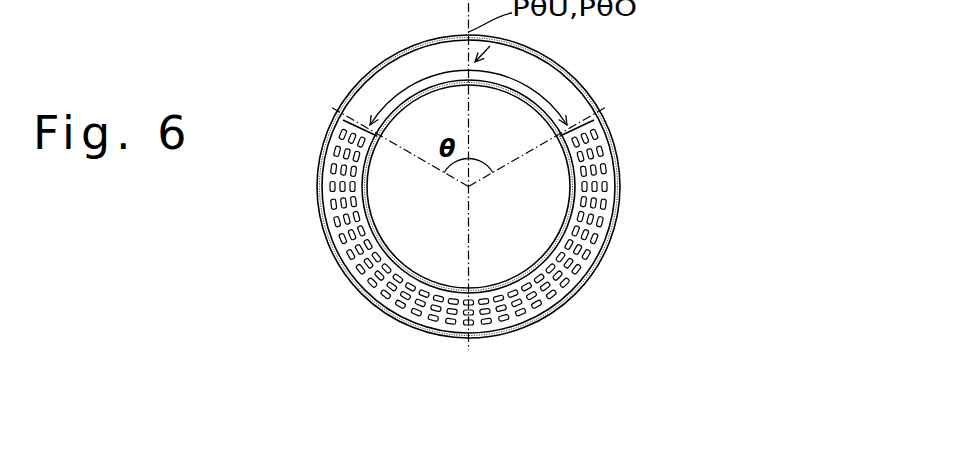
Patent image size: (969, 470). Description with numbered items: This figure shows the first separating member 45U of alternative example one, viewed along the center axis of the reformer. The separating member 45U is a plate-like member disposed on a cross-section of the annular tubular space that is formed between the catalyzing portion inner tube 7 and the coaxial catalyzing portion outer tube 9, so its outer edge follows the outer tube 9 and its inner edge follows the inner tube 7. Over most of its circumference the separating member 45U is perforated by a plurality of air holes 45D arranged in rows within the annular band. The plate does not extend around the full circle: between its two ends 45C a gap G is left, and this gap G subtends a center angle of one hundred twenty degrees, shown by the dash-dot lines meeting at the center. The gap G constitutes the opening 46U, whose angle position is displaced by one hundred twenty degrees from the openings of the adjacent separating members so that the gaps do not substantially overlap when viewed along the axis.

The catalyzing portion inner tube 7 is at (567, 222).
The catalyzing portion outer tube 9 is at (616, 187).
The separating member 45U is at (607, 138).
The air hole 45D is at (573, 268).
The end 45C is at (368, 122).
The opening 46U is at (508, 39).
The gap G is at (468, 97).